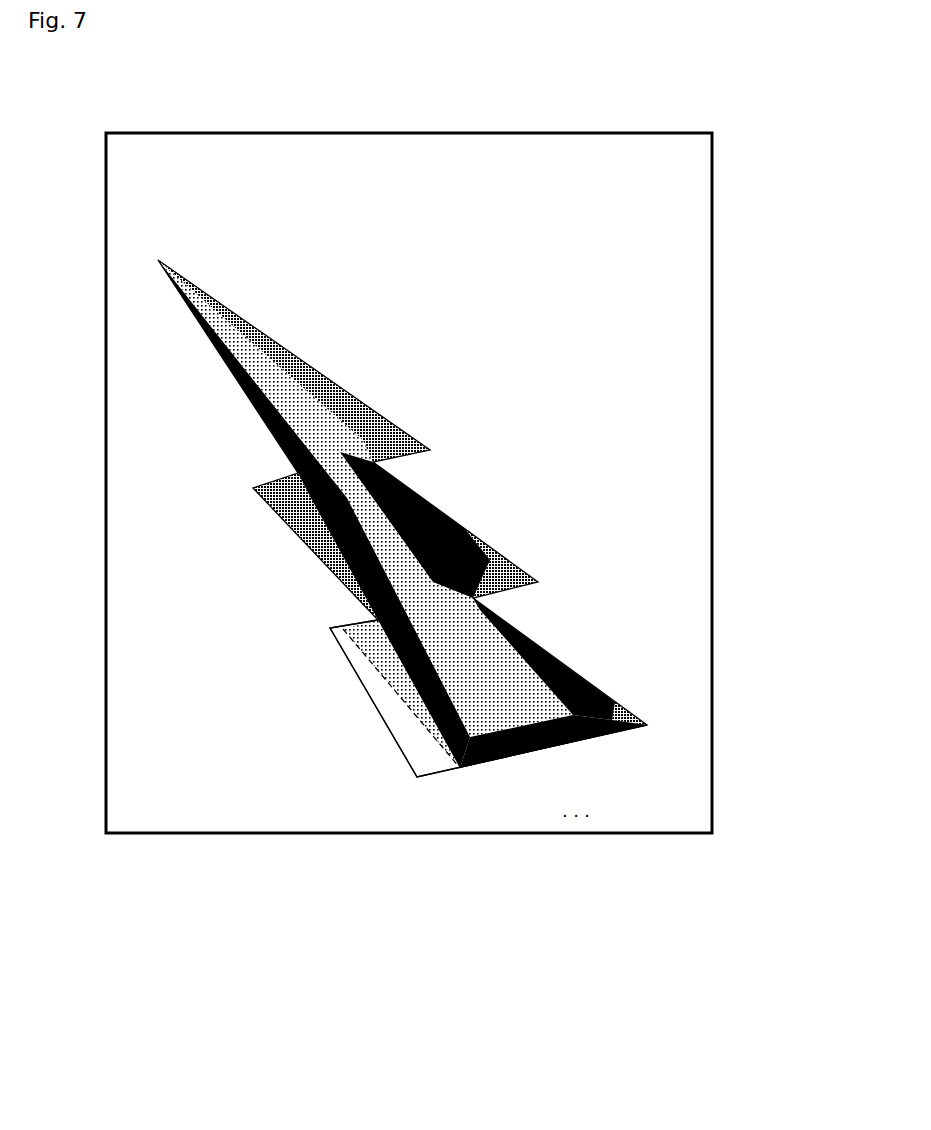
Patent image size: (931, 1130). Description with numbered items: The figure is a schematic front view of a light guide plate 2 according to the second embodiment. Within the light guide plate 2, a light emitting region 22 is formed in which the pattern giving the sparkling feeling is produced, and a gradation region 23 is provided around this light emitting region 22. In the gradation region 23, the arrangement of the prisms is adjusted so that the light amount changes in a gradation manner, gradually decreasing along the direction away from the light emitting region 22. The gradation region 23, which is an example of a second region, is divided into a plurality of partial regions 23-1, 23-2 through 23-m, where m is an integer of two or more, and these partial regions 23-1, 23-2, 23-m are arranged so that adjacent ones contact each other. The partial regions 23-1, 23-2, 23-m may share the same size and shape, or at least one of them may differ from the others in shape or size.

The light guide plate 2 is at (749, 841).
The light emitting region 22 is at (396, 518).
The gradation region 23 is at (515, 568).
The partial region 23-1 is at (440, 763).
The partial region 23-2 is at (484, 764).
The partial region 23-m is at (617, 740).